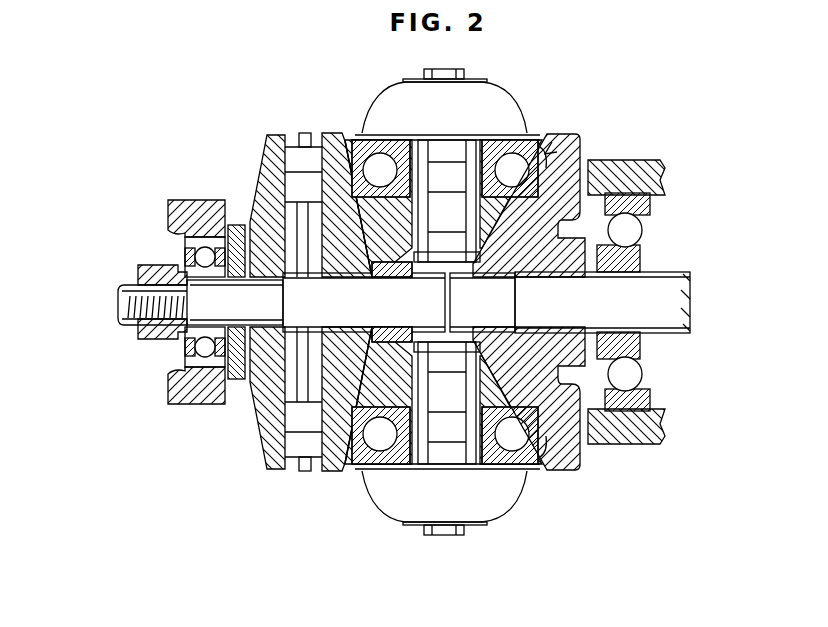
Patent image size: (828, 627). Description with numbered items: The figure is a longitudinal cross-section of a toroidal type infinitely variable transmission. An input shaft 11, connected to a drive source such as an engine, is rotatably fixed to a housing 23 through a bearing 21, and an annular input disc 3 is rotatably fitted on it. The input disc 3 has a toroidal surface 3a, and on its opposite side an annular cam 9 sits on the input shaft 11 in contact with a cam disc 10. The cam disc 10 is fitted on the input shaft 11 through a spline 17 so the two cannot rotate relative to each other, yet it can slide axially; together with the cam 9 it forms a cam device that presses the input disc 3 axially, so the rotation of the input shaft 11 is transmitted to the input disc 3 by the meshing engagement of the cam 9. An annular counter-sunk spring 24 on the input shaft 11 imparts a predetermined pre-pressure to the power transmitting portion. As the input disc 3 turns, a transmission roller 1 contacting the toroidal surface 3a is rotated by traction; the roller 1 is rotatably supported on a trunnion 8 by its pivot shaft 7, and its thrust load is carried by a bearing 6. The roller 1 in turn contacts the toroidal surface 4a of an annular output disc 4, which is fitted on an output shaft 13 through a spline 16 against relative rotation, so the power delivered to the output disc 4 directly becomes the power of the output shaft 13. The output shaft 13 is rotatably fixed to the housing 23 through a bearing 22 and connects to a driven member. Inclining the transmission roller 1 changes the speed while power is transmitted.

The transmission roller 1 is at (520, 204).
The input disc 3 is at (322, 140).
The toroidal surface 3a is at (346, 140).
The output disc 4 is at (568, 133).
The toroidal surface 4a is at (542, 146).
The bearing 6 is at (548, 150).
The pivot shaft 7 is at (444, 214).
The trunnion 8 is at (484, 96).
The cam 9 is at (290, 138).
The cam disc 10 is at (258, 188).
The input shaft 11 is at (122, 297).
The output shaft 13 is at (644, 315).
The spline 16 is at (497, 279).
The spline 17 is at (268, 283).
The bearing 21 is at (172, 243).
The bearing 22 is at (653, 214).
The housing 23 is at (197, 410).
The counter-sunk spring 24 is at (237, 380).